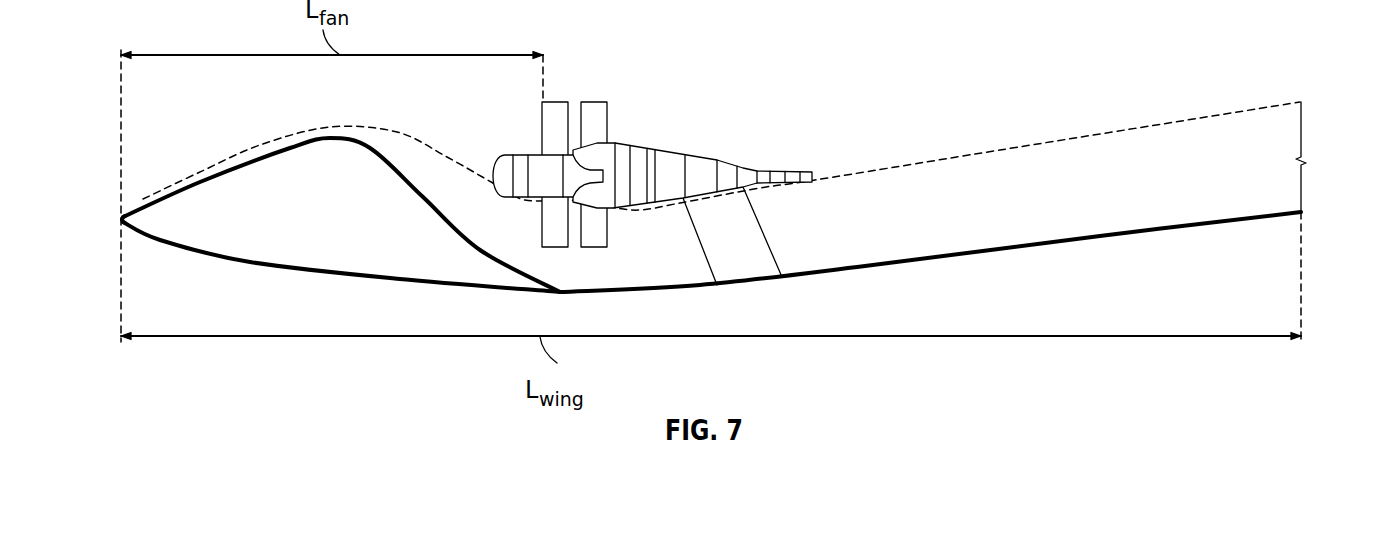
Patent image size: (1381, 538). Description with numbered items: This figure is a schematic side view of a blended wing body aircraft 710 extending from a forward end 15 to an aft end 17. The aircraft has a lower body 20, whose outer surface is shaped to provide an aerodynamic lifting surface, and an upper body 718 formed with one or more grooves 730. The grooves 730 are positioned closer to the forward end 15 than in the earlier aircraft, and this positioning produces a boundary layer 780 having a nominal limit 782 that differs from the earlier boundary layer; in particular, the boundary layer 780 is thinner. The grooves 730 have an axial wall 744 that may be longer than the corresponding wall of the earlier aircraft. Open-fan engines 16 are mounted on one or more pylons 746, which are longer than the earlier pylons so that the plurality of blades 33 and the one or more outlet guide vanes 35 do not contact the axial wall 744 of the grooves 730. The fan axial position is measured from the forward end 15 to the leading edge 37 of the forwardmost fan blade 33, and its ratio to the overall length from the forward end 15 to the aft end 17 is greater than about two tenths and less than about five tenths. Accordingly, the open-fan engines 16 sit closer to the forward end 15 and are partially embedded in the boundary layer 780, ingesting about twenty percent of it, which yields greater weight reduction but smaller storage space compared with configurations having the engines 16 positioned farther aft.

The blended wing body aircraft 710 is at (121, 27).
The forward end 15 is at (103, 217).
The aft end 17 is at (1314, 238).
The lower body 20 is at (225, 267).
The upper body 718 is at (288, 148).
The nominal limit 782 is at (395, 122).
The grooves 730 is at (440, 166).
The leading edge 37 is at (541, 123).
The fan blades 33 is at (550, 102).
The outlet guide vanes 35 is at (595, 102).
The open-fan engines 16 is at (643, 164).
The boundary layer 780 is at (1032, 147).
The axial wall 744 is at (1132, 227).
The pylons 746 is at (707, 263).